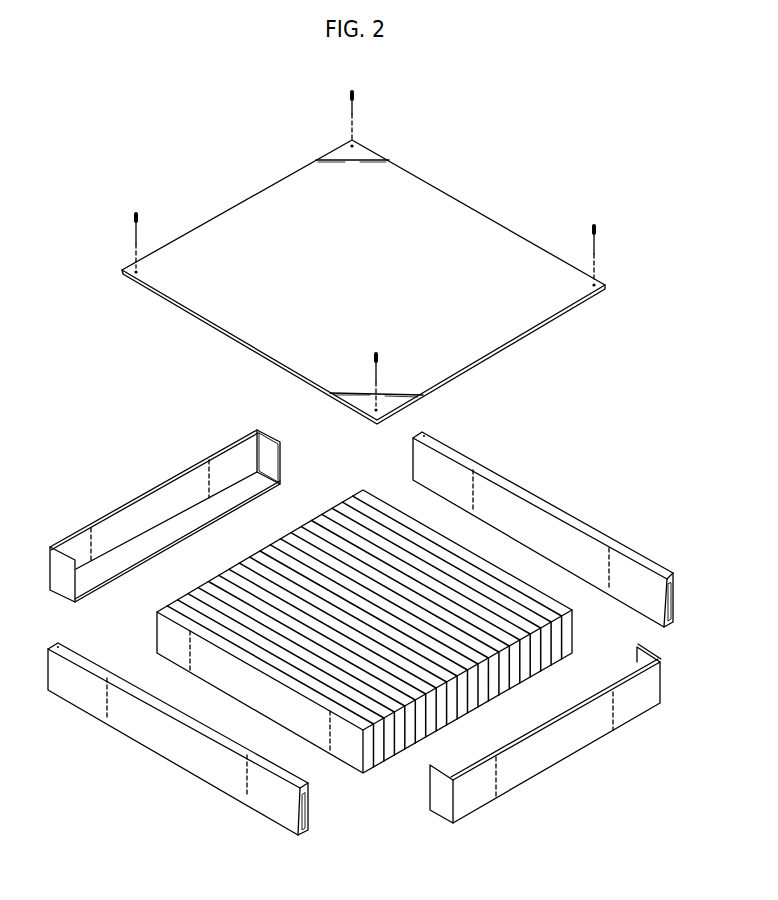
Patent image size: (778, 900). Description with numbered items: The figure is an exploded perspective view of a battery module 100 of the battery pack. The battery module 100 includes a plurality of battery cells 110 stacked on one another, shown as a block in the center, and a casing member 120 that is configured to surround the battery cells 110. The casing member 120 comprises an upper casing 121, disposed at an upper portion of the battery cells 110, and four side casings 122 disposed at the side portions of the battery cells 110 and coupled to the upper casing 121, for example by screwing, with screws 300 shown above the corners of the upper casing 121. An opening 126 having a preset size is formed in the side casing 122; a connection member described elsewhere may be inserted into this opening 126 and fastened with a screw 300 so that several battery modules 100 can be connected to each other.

The battery module 100 is at (78, 154).
The battery cells 110 is at (389, 752).
The casing member 120 is at (510, 161).
The upper casing 121 is at (448, 208).
The side casing 122 is at (153, 502).
The opening 126 is at (308, 812).
The screw 300 is at (594, 226).